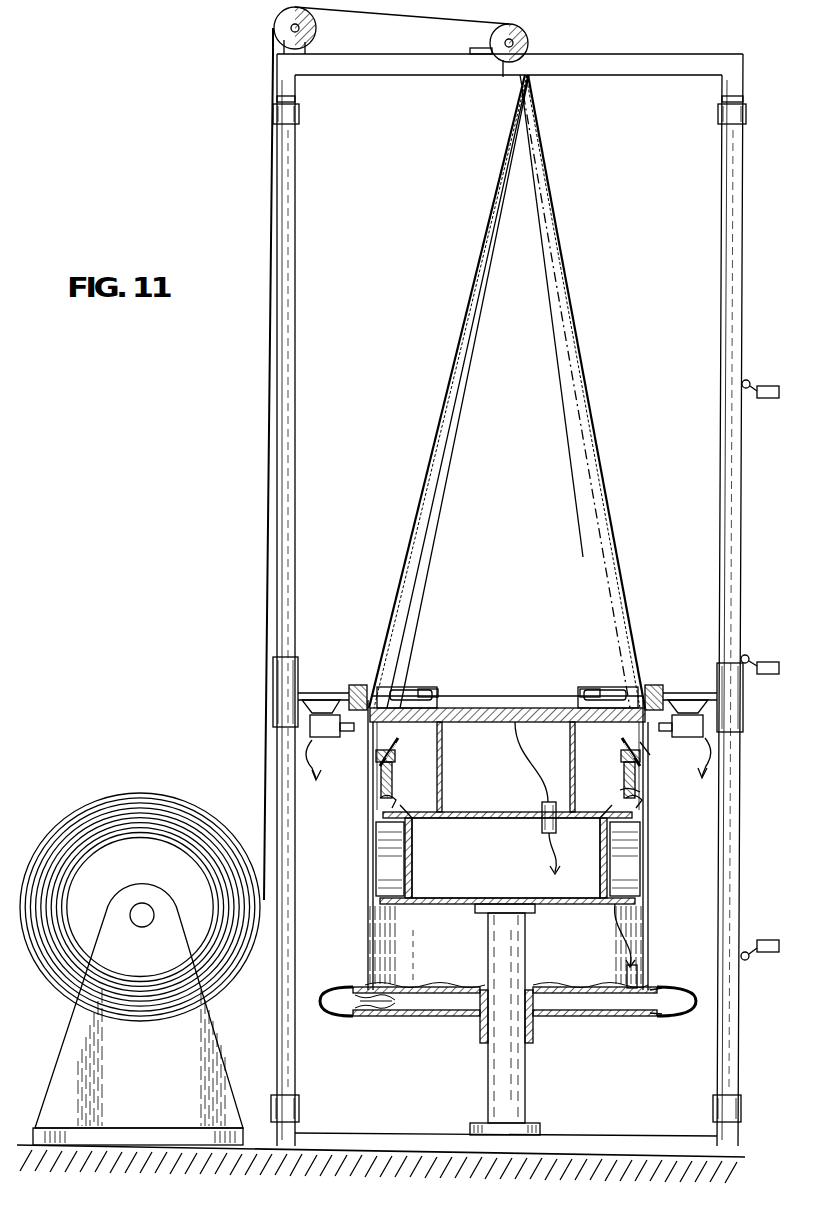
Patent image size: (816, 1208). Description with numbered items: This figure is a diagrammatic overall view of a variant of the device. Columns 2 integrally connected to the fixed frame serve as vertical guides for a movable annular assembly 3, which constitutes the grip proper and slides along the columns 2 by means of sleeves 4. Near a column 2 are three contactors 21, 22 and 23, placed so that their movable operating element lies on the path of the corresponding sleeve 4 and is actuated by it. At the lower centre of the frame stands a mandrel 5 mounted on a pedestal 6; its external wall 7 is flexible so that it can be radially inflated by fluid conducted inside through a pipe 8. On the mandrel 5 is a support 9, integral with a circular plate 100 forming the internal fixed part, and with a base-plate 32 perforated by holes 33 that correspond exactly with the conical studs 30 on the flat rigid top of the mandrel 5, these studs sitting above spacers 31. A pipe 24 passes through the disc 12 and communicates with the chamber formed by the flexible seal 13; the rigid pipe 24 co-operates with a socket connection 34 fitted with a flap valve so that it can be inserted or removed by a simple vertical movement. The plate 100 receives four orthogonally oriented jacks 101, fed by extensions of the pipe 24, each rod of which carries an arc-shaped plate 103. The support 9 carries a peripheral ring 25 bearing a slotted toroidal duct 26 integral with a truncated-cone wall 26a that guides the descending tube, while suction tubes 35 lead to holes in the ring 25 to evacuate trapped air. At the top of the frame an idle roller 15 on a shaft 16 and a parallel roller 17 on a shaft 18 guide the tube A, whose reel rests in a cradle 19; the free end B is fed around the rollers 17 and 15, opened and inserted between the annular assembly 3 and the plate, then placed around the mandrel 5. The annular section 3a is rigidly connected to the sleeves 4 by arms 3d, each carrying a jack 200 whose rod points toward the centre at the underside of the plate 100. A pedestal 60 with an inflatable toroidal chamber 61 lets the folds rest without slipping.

The columns 2 is at (292, 412).
The movable annular assembly 3 is at (651, 682).
The annular section 3a is at (356, 685).
The arms 3d is at (320, 697).
The sleeves 4 is at (275, 690).
The mandrel 5 is at (432, 906).
The pedestal 6 is at (487, 1088).
The external wall 7 is at (638, 850).
The pipe 8 is at (625, 935).
The support 9 is at (444, 762).
The disc 12 is at (380, 752).
The flexible seal 13 is at (402, 690).
The roller 15 is at (522, 37).
The shaft 16 is at (503, 78).
The roller 17 is at (276, 16).
The shaft 18 is at (277, 38).
The cradle 19 is at (60, 1048).
The contactor 21 is at (768, 662).
The contactor 22 is at (768, 940).
The contactor 23 is at (770, 386).
The pipe 24 is at (546, 778).
The peripheral ring 25 is at (636, 790).
The toroidal duct 26 is at (640, 785).
The wall 26a is at (643, 744).
The conical studs 30 is at (390, 803).
The spacers 31 is at (376, 888).
The base-plate 32 is at (463, 820).
The holes 33 is at (405, 815).
The socket connection 34 is at (543, 830).
The tube 35 is at (404, 768).
The pedestal 60 is at (593, 1017).
The inflatable toroidal chamber 61 is at (680, 1020).
The circular plate 100 is at (480, 708).
The jacks 101 is at (418, 690).
The plate 103 is at (428, 690).
The jack 200 is at (325, 725).
The tube A is at (562, 340).
The free end B is at (448, 1003).